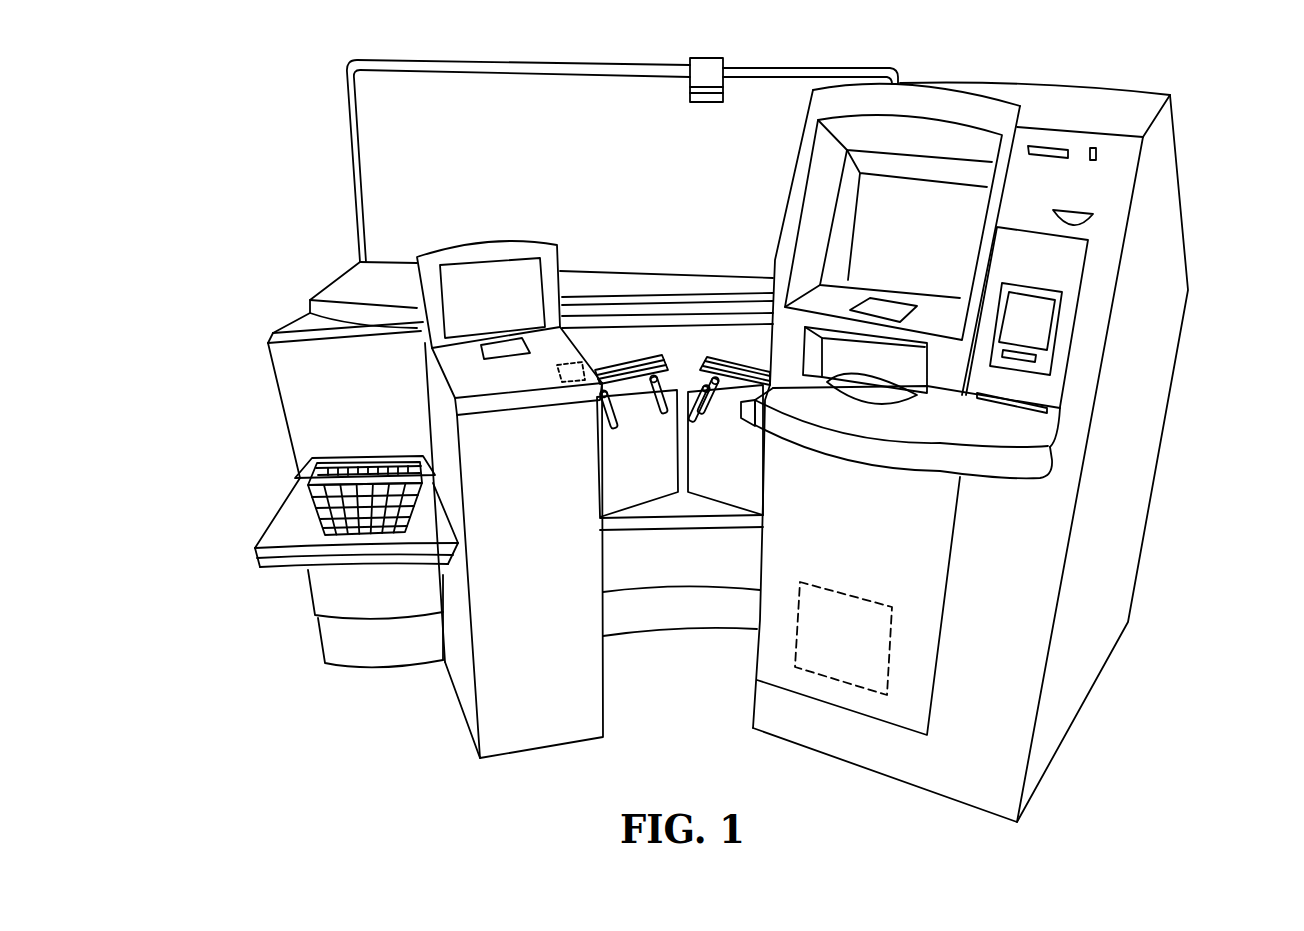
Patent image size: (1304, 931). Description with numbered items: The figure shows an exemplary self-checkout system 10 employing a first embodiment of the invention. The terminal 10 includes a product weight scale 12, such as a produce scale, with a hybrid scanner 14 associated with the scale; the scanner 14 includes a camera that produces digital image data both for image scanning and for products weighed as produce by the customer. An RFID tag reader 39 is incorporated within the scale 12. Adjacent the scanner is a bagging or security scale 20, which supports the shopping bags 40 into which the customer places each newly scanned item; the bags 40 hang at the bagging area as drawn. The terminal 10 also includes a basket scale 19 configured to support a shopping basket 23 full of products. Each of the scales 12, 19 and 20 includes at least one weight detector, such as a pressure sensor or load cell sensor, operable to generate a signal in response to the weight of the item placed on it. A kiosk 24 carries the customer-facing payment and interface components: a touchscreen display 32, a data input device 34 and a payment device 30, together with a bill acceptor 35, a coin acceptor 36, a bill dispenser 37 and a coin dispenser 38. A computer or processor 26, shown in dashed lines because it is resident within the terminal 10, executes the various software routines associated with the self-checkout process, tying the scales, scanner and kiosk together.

The self-checkout system 10 is at (203, 193).
The product weight scale 12 is at (458, 380).
The hybrid scanner 14 is at (517, 234).
The basket scale 19 is at (286, 568).
The bagging or security scale 20 is at (757, 522).
The shopping basket 23 is at (322, 457).
The kiosk 24 is at (1172, 243).
The computer or processor 26 is at (860, 598).
The payment device 30 is at (1037, 353).
The touchscreen display 32 is at (877, 205).
The data input device 34 is at (890, 313).
The bill acceptor 35 is at (1045, 147).
The coin acceptor 36 is at (1100, 155).
The bill dispenser 37 is at (1047, 410).
The coin dispenser 38 is at (1078, 212).
The RFID tag reader 39 is at (553, 370).
The bags 40 is at (622, 474).